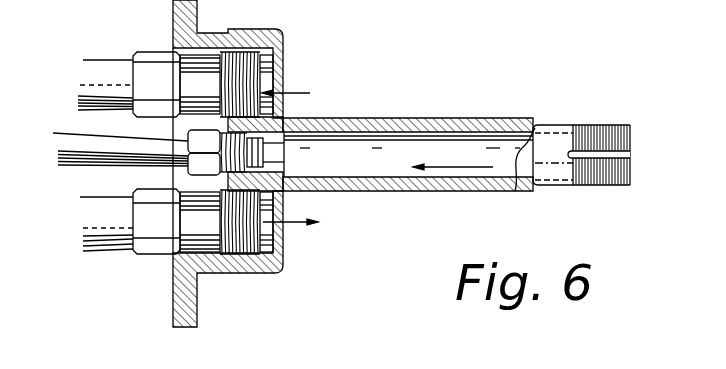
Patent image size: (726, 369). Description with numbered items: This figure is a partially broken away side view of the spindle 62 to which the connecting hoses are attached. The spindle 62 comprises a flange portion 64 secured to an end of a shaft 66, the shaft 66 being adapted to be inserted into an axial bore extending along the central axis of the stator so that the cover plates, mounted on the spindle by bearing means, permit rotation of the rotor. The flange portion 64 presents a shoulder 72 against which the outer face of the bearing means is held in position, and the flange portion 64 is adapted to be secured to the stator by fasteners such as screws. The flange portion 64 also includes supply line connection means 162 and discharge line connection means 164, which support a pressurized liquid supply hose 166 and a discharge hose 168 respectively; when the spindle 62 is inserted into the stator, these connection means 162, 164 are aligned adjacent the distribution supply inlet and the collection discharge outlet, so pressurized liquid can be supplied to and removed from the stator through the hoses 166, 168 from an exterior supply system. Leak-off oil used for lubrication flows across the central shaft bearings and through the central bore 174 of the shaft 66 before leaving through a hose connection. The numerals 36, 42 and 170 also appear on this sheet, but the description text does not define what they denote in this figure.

The valve body 36 is at (507, 0).
The housing 42 is at (403, 5).
The spindle 62 is at (377, 116).
The flange portion 64 is at (256, 47).
The shaft 66 is at (478, 123).
The shoulder 72 is at (240, 32).
The supply line connection means 162 is at (262, 238).
The discharge line connection means 164 is at (260, 82).
The pressurized liquid supply hose 166 is at (105, 232).
The discharge hose 168 is at (100, 67).
The center tube fitting 170 is at (125, 147).
The central bore 174 is at (352, 163).